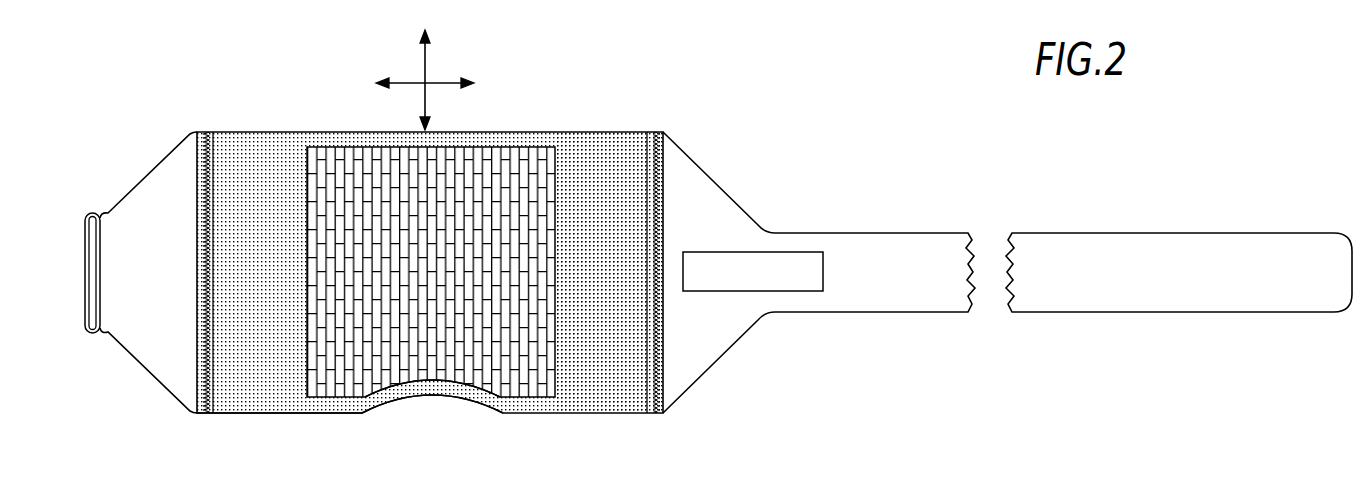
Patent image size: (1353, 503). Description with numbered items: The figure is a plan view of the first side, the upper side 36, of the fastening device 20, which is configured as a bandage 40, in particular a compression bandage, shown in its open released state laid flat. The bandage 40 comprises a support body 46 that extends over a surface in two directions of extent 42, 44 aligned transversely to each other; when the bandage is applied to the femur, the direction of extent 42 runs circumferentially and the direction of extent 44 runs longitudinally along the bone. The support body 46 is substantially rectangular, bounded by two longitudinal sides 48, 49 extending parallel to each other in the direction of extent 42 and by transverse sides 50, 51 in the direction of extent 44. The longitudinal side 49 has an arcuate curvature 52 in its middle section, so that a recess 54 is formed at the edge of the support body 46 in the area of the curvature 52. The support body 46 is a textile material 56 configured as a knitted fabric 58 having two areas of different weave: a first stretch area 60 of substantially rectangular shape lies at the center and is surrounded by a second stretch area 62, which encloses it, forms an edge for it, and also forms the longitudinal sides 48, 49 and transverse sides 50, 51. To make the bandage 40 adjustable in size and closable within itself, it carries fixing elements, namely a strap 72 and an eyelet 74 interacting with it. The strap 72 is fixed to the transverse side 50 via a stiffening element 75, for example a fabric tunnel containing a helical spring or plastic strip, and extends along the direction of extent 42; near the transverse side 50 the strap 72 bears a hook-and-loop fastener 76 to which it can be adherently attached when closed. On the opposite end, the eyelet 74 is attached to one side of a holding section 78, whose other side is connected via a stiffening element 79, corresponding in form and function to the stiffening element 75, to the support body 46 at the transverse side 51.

The fastening device 20 is at (593, 126).
The upper side 36 is at (653, 158).
The bandage 40 is at (710, 148).
The direction of extent 42 is at (437, 82).
The direction of extent 44 is at (424, 72).
The support body 46 is at (627, 342).
The longitudinal side 48 is at (290, 132).
The longitudinal side 49 is at (287, 415).
The transverse side 50 is at (647, 316).
The transverse side 51 is at (213, 362).
The arcuate curvature 52 is at (450, 398).
The recess 54 is at (417, 402).
The textile material 56 is at (637, 230).
The knitted fabric 58 is at (587, 382).
The first stretch area 60 is at (513, 160).
The second stretch area 62 is at (632, 165).
The strap 72 is at (1058, 257).
The eyelet 74 is at (85, 226).
The stiffening element 75 is at (654, 412).
The hook-and-loop fastener 76 is at (797, 262).
The holding section 78 is at (162, 197).
The stiffening element 79 is at (210, 133).